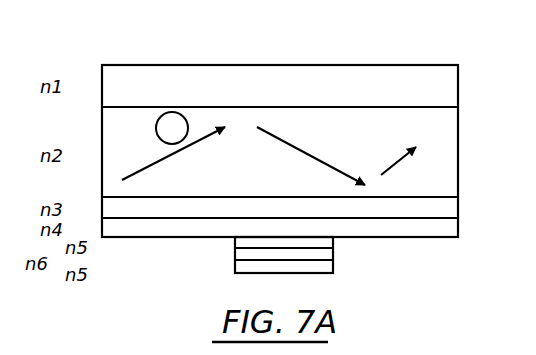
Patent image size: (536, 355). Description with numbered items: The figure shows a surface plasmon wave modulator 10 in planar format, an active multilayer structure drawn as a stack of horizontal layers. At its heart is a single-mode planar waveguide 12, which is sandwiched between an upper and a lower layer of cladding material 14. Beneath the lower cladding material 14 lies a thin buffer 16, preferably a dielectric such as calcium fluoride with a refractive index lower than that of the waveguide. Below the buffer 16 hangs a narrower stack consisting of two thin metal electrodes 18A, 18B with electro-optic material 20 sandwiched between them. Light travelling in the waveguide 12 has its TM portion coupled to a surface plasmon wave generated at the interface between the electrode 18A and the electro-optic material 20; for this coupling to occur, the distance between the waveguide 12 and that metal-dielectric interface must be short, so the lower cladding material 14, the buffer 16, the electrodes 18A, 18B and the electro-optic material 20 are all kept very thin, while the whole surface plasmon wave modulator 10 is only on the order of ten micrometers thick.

The surface plasmon wave modulator 10 is at (365, 28).
The planar waveguide 12 is at (431, 138).
The cladding material 14 is at (453, 88).
The buffer 16 is at (458, 226).
The metal electrode 18A is at (333, 240).
The metal electrode 18B is at (333, 268).
The electro-optic material 20 is at (233, 257).